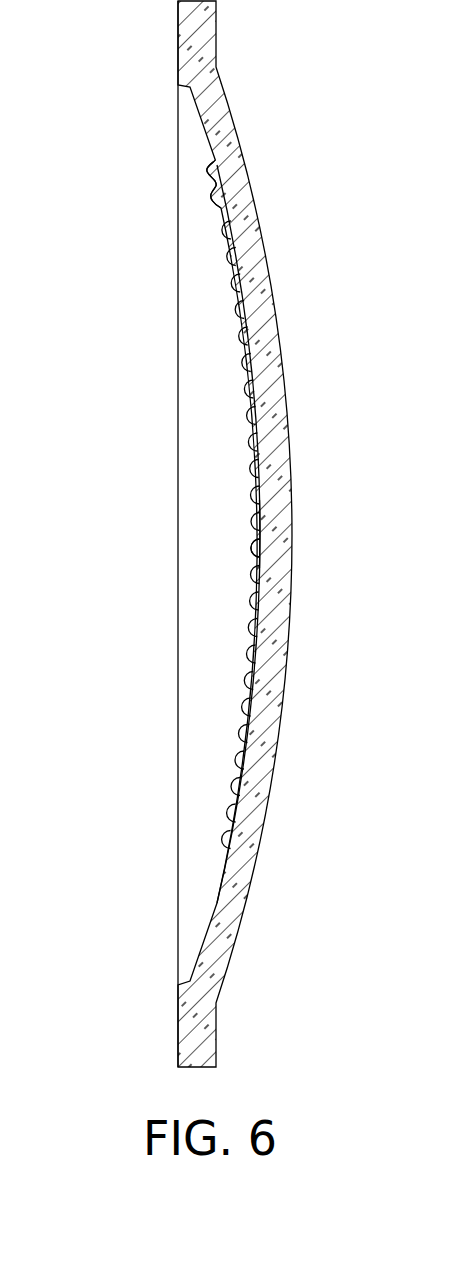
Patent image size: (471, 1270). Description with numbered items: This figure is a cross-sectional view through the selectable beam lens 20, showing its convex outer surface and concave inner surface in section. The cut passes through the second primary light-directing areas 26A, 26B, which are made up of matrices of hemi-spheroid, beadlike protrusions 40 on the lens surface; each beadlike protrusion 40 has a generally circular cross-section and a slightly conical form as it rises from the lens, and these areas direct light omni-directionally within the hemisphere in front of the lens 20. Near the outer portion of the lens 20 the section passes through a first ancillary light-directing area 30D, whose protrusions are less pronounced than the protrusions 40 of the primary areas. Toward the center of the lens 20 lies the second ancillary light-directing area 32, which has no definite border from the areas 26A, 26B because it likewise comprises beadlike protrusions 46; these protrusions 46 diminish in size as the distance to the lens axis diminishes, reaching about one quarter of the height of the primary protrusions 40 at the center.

The lens 20 is at (256, 99).
The first ancillary light-directing area 30D is at (201, 187).
The second primary light-directing area 26A is at (200, 369).
The second primary light-directing area 26B is at (199, 697).
The second ancillary light-directing area 32 is at (237, 529).
The beadlike protrusion 46 is at (250, 548).
The beadlike protrusion 40 is at (237, 317).